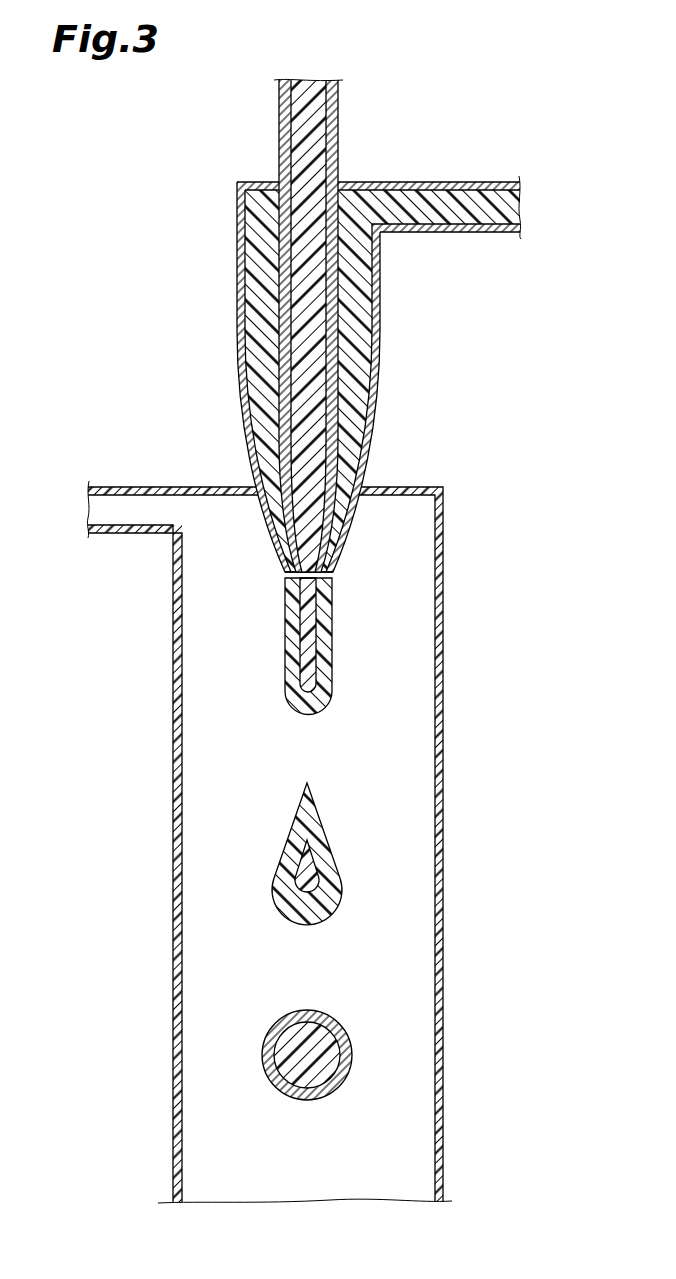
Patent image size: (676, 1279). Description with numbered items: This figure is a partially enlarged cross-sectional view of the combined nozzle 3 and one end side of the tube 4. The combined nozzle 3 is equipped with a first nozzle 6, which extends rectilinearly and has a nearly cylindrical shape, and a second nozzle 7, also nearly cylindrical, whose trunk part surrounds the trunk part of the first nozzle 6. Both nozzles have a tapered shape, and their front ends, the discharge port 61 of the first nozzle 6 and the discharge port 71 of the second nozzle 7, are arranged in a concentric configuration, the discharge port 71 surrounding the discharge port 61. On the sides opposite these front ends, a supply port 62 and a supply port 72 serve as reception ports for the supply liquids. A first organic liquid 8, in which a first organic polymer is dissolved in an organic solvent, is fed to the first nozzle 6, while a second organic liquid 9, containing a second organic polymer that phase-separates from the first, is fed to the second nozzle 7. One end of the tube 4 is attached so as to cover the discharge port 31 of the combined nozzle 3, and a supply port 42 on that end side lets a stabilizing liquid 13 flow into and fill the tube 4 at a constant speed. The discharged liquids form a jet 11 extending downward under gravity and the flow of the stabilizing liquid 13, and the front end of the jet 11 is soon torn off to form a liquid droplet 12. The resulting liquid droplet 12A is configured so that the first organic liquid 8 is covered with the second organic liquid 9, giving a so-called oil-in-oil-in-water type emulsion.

The combined nozzle 3 is at (308, 325).
The first nozzle 6 is at (325, 323).
The second nozzle 7 is at (325, 345).
The supply port 62 is at (340, 323).
The first organic liquid 8 is at (307, 160).
The second organic liquid 9 is at (428, 207).
The supply port 72 is at (495, 182).
The discharge port 61 is at (320, 565).
The discharge port 71 is at (334, 568).
The discharge port 31 is at (523, 437).
The tube 4 is at (166, 876).
The supply port 42 is at (125, 533).
The stabilizing liquid 13 is at (215, 755).
The jet 11 is at (344, 638).
The liquid droplet 12A is at (398, 855).
The liquid droplet 12 is at (364, 1052).